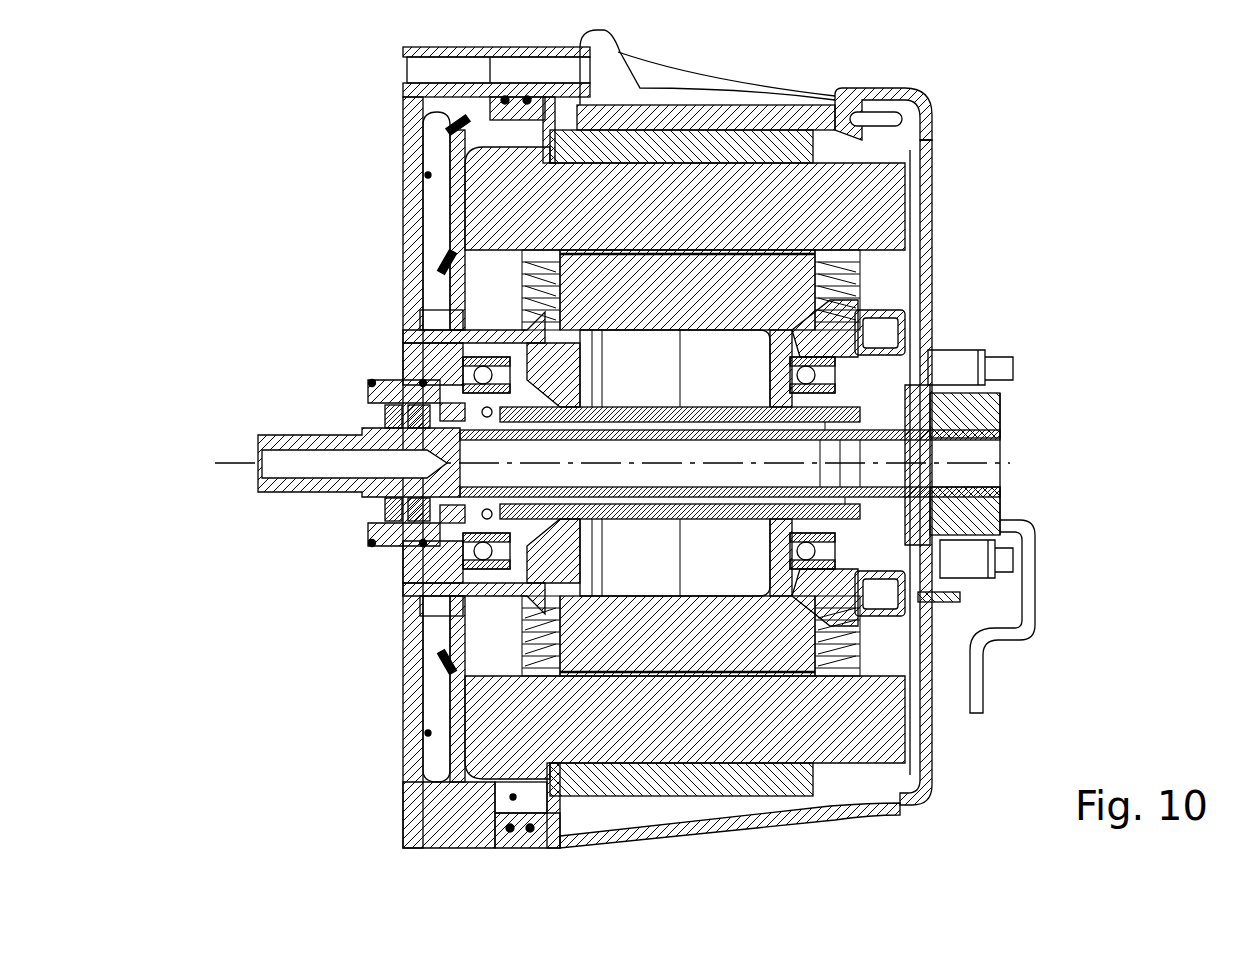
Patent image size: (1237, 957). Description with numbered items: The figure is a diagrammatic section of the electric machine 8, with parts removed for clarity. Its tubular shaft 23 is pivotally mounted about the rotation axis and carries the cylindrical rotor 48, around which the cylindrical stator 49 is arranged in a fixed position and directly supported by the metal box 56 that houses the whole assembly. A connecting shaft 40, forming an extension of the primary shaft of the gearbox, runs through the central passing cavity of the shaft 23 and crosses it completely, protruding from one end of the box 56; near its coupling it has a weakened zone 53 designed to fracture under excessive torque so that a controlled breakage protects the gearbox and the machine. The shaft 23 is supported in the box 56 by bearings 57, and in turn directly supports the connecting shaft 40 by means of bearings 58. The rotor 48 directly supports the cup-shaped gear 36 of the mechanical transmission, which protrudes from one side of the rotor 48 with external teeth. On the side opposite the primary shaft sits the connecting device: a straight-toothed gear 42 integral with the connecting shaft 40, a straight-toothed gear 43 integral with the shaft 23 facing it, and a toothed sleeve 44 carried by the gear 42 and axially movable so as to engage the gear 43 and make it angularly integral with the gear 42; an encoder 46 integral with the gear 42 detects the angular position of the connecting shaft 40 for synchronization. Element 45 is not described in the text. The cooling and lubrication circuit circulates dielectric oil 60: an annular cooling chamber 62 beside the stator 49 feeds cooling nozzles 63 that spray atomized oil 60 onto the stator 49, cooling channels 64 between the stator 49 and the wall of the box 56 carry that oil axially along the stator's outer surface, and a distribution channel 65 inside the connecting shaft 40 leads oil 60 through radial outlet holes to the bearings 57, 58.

The electric machine 8 is at (252, 237).
The shaft 23 is at (630, 407).
The gear 36 is at (420, 330).
The connecting shaft 40 is at (262, 435).
The gear 42 is at (920, 380).
The gear 43 is at (920, 600).
The toothed sleeve 44 is at (935, 555).
The connector block 45 is at (880, 332).
The encoder 46 is at (980, 425).
The rotor 48 is at (685, 463).
The stator 49 is at (681, 463).
The weakened zone 53 is at (358, 430).
The box 56 is at (928, 190).
The bearings 57 is at (800, 375).
The bearings 58 is at (480, 515).
The oil 60 is at (513, 797).
The annular cooling chamber 62 is at (428, 175).
The cooling nozzles 63 is at (458, 125).
The cooling channels 64 is at (745, 125).
The distribution channel 65 is at (730, 463).